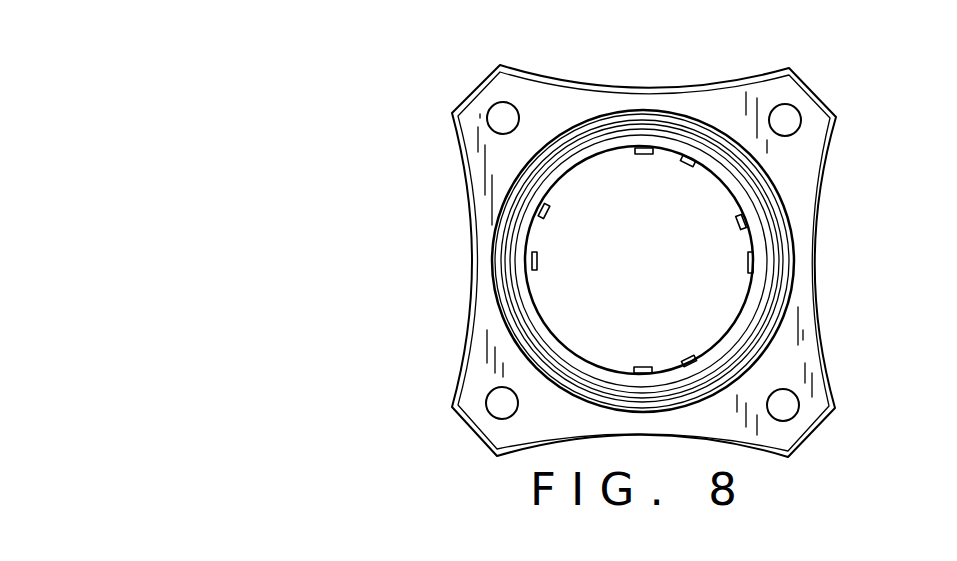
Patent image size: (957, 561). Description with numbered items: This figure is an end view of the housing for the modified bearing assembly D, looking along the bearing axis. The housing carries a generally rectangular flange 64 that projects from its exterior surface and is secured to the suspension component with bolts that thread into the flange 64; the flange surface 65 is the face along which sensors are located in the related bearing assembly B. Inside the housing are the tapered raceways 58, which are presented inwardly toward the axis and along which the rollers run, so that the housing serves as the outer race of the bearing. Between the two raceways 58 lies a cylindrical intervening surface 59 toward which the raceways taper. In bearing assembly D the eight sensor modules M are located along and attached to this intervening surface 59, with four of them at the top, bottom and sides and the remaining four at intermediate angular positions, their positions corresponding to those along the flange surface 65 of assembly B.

The tapered raceways 58 is at (519, 305).
The intervening surface 59 is at (752, 292).
The flange 64 is at (803, 152).
The flange surface 65 is at (458, 141).
The sensor modules M is at (686, 166).
The modified bearing assembly D is at (845, 100).